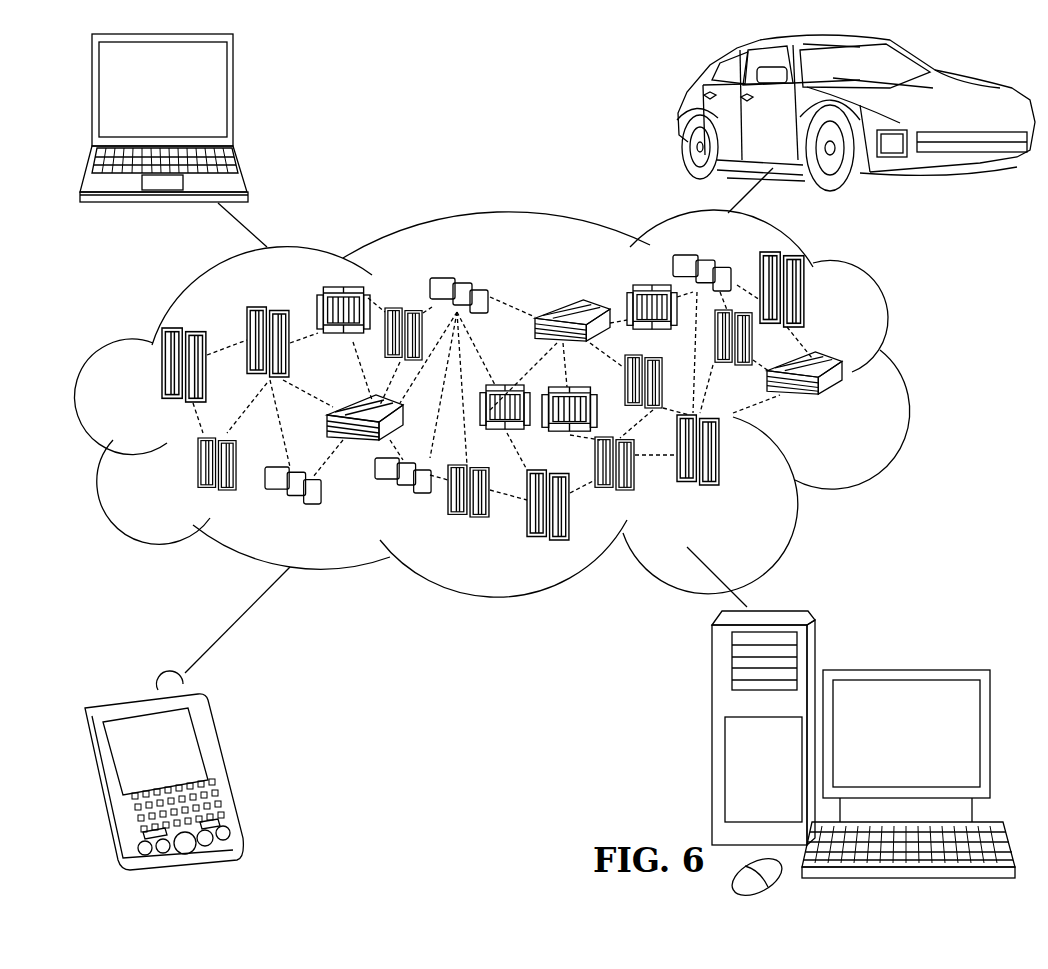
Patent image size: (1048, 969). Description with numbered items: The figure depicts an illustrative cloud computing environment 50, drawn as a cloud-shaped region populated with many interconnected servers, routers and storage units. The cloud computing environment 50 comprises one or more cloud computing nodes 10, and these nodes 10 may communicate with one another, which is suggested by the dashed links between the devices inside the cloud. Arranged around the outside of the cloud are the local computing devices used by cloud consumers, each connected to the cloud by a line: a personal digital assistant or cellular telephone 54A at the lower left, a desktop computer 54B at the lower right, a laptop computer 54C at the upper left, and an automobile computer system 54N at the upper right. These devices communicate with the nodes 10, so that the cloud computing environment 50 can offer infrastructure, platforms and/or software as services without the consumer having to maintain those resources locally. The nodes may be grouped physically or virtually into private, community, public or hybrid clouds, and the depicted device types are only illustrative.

The cloud computing node 10 is at (852, 408).
The cloud computing environment 50 is at (908, 375).
The personal digital assistant or cellular telephone 54A is at (227, 762).
The desktop computer 54B is at (903, 668).
The laptop computer 54C is at (233, 95).
The automobile computer system 54N is at (680, 113).